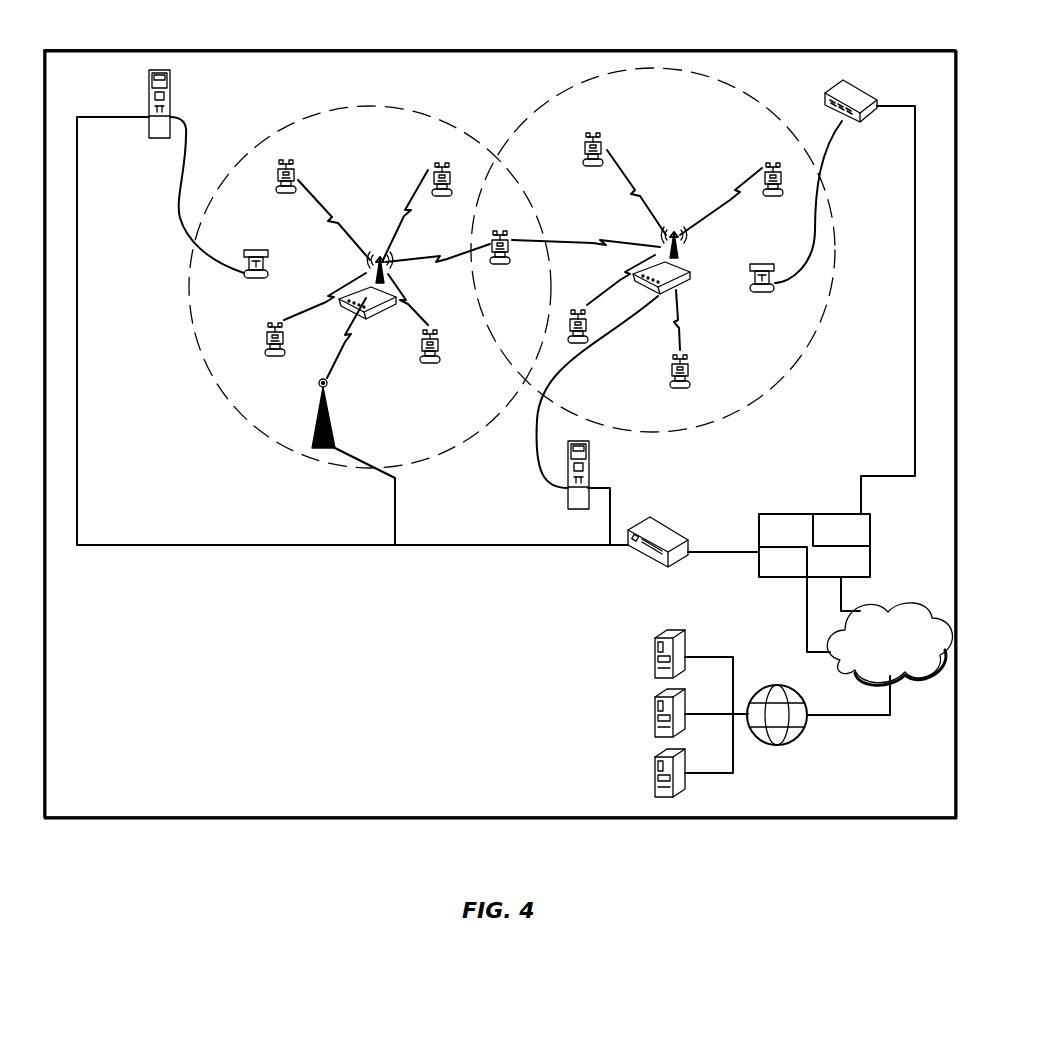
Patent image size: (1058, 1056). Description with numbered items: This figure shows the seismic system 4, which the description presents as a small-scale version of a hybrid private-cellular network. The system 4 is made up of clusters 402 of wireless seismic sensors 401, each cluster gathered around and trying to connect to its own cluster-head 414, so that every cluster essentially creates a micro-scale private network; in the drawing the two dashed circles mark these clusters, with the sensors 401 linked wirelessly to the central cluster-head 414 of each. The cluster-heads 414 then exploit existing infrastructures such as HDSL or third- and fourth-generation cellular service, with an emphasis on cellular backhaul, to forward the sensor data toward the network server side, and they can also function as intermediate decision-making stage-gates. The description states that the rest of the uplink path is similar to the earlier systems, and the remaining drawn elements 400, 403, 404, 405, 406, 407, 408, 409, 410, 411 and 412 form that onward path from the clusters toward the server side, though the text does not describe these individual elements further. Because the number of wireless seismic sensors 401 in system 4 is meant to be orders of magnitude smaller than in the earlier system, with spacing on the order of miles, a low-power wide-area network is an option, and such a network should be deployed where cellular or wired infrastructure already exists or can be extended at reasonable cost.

The seismic system 4 is at (117, 50).
The cellular tower 400 is at (318, 412).
The seismic sensor 401 is at (440, 163).
The cluster 402 is at (290, 124).
The wired meter device 403 is at (257, 250).
The communication wire 404 is at (178, 200).
The data collector unit 405 is at (149, 88).
The local network 406 is at (77, 330).
The gateway router 407 is at (668, 522).
The server 408 is at (655, 652).
The network switch 409 is at (858, 82).
The head end system 410 is at (820, 514).
The network cloud 411 is at (905, 651).
The internet 412 is at (786, 744).
The cluster-head 414 is at (362, 282).